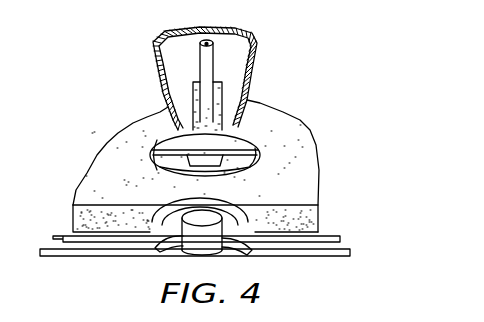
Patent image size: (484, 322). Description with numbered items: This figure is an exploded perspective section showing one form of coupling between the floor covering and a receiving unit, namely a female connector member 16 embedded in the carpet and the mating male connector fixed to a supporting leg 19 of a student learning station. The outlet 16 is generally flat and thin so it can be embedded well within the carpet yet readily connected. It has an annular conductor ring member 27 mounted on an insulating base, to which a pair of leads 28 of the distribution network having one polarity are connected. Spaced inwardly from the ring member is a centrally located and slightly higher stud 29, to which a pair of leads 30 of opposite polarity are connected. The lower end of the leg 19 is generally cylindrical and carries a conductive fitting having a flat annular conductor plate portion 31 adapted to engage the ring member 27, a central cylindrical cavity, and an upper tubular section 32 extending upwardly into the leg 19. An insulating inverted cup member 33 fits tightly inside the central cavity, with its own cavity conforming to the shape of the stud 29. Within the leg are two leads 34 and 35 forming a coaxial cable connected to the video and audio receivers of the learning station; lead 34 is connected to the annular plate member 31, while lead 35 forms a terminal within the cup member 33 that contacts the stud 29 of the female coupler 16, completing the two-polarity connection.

The female connector member 16 is at (322, 132).
The supporting leg 19 is at (257, 68).
The annular conductor ring member 27 is at (73, 205).
The pair of leads 28 is at (340, 240).
The stud 29 is at (262, 203).
The pair of leads 30 is at (335, 256).
The annular conductor plate portion 31 is at (158, 142).
The upper tubular section 32 is at (219, 99).
The insulating inverted cup member 33 is at (153, 166).
The lead 34 is at (240, 112).
The lead 35 is at (240, 172).